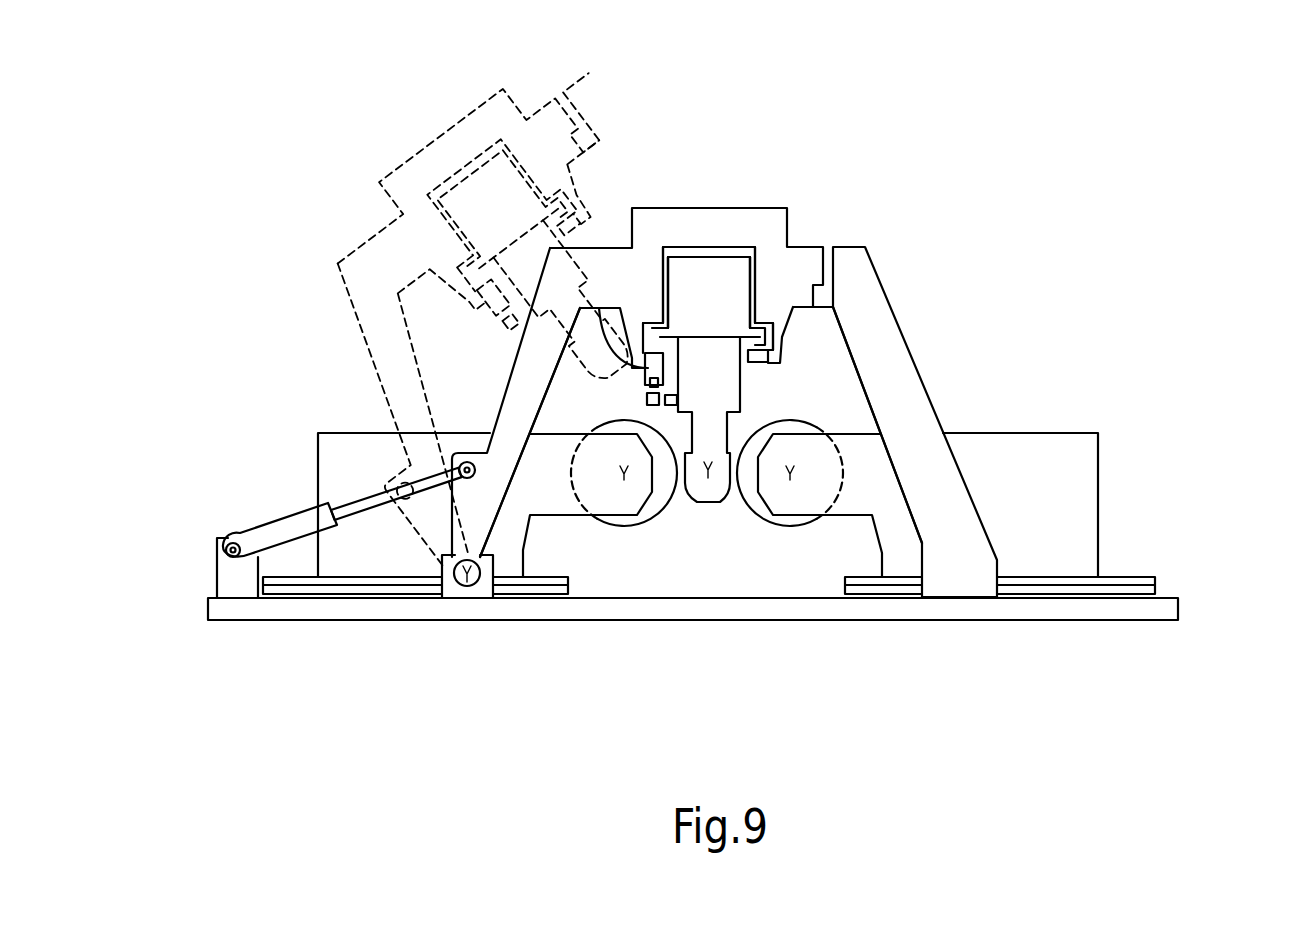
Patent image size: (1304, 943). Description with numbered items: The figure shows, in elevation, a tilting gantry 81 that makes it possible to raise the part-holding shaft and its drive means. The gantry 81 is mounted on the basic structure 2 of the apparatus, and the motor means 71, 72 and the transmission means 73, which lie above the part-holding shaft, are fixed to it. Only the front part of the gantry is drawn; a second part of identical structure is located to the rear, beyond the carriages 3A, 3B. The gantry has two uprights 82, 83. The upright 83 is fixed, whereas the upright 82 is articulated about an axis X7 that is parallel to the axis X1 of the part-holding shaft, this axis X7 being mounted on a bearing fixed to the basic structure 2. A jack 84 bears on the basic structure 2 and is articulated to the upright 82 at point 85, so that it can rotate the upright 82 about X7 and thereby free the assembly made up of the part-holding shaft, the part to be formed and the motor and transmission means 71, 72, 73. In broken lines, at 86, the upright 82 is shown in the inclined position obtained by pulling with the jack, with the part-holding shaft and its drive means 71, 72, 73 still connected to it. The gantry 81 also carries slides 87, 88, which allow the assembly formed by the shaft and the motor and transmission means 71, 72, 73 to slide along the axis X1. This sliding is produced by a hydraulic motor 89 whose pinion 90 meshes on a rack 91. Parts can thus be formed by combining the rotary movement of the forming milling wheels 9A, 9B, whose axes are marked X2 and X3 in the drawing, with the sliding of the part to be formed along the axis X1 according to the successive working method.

The basic structure 2 is at (390, 606).
The carriage 3A is at (358, 457).
The carriage 3B is at (1010, 457).
The forming milling wheel 9A is at (661, 526).
The forming milling wheel 9B is at (773, 526).
The motor means 71 is at (727, 290).
The motor means 72 is at (709, 292).
The transmission means 73 is at (709, 285).
The gantry 81 is at (738, 158).
The upright 82 is at (540, 347).
The upright 83 is at (915, 418).
The jack 84 is at (282, 510).
The articulation point 85 is at (462, 478).
The inclined position of gantry upright 86 is at (413, 248).
The slide 87 is at (599, 307).
The slide 88 is at (770, 368).
The hydraulic motor 89 is at (653, 363).
The pinion 90 is at (653, 399).
The rack 91 is at (692, 402).
The axis of the part-holding shaft X1 is at (709, 478).
The left roller axis X2 is at (624, 480).
The right roller axis X3 is at (790, 480).
The articulation axis X7 is at (467, 585).